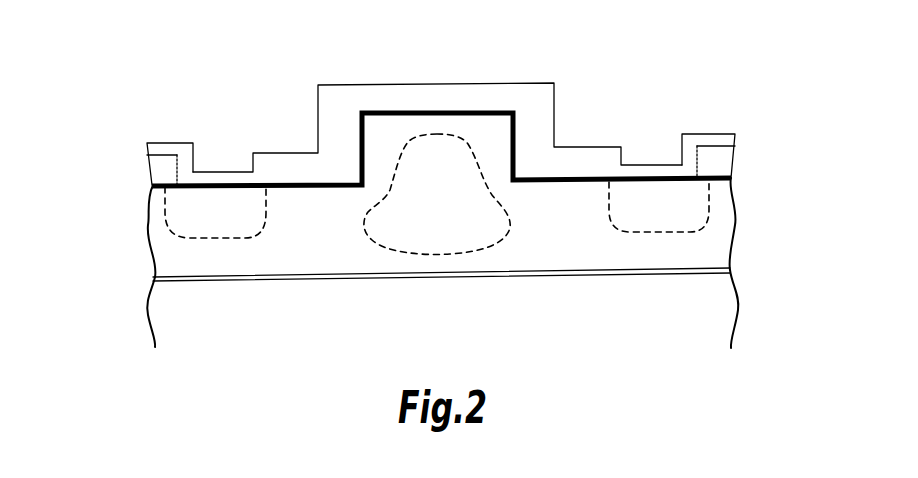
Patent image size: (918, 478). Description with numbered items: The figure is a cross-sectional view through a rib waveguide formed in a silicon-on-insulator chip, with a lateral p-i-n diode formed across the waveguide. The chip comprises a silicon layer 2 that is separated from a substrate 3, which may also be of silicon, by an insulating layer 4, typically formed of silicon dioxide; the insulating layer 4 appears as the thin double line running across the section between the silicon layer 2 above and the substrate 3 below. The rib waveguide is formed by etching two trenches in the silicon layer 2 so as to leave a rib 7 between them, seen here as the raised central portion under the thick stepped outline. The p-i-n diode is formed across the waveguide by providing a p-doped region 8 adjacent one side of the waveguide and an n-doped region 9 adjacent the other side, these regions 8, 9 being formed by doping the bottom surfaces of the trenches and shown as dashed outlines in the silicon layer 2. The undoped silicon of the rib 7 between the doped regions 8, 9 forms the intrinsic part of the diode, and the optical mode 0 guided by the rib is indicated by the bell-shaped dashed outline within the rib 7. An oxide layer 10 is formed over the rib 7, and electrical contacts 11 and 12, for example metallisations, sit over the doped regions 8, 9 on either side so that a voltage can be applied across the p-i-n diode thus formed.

The optical mode 0 is at (483, 247).
The silicon layer 2 is at (712, 247).
The substrate 3 is at (180, 323).
The insulating layer 4 is at (153, 278).
The rib 7 is at (388, 133).
The p-doped region 8 is at (188, 213).
The n-doped region 9 is at (688, 198).
The oxide layer 10 is at (540, 106).
The electrical contact 11 is at (176, 146).
The electrical contact 12 is at (702, 137).